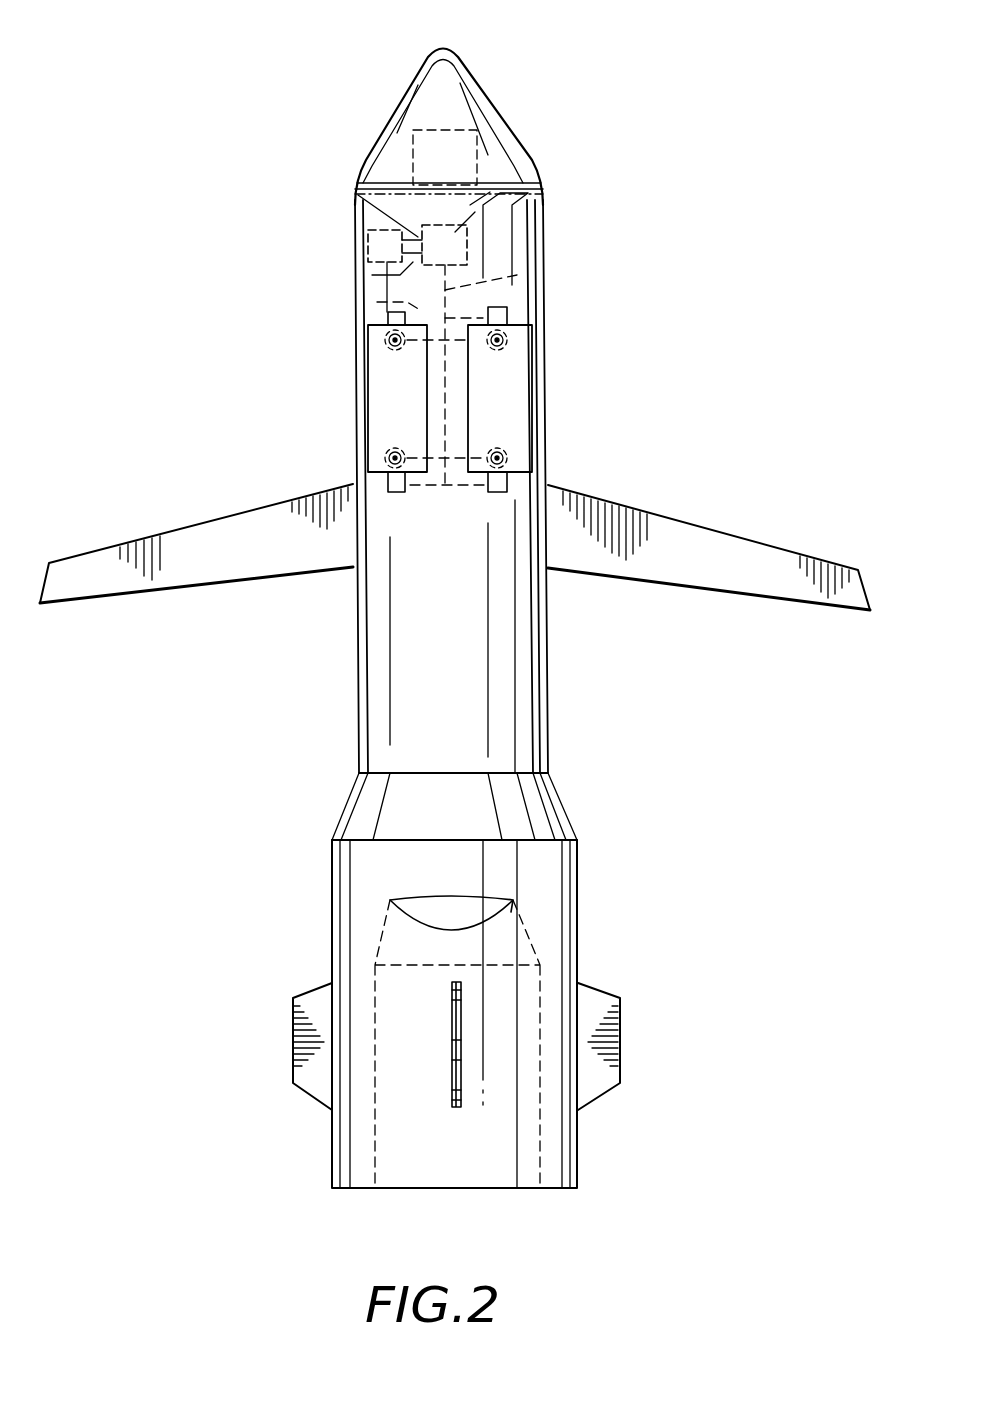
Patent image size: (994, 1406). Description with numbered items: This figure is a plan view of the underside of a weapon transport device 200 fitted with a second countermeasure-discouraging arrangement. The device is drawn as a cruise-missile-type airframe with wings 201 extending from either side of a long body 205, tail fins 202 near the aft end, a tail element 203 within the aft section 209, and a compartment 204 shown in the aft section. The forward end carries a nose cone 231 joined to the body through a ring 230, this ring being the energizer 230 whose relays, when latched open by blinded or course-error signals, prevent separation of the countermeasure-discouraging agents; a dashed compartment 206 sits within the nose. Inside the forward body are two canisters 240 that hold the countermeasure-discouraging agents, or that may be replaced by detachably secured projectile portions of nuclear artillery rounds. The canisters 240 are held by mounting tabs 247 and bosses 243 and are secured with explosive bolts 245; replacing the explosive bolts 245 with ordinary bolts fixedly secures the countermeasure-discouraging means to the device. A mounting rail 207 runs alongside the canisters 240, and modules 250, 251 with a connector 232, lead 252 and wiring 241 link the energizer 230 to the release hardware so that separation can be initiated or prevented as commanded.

The unmanned aerial vehicle 200 is at (748, 12).
The wings 201 is at (720, 570).
The tail fins 202 is at (585, 1005).
The tail control element 203 is at (458, 1035).
The parachute compartment 204 is at (473, 905).
The fuselage body 205 is at (475, 693).
The nose sensor compartment 206 is at (462, 140).
The mounting rail 207 is at (502, 212).
The tail section 209 is at (503, 1142).
The energizer 230 is at (517, 190).
The nose cone 231 is at (530, 163).
The connector 232 is at (368, 173).
The canisters 240 is at (507, 397).
The wiring 241 is at (517, 275).
The fastener bosses 243 is at (503, 340).
The explosive bolts 245 is at (503, 338).
The mounting tabs 247 is at (507, 308).
The electronics module 250 is at (367, 238).
The control module 251 is at (425, 233).
The wire lead 252 is at (367, 273).